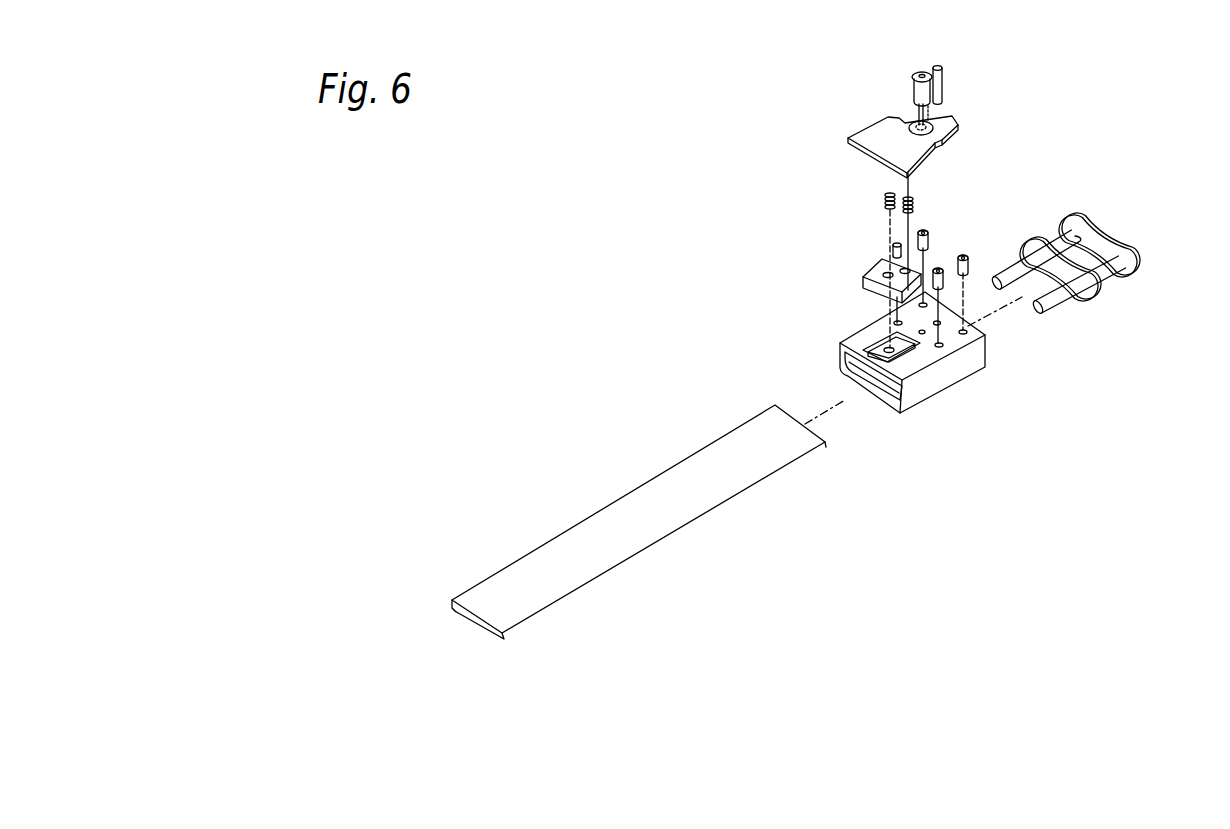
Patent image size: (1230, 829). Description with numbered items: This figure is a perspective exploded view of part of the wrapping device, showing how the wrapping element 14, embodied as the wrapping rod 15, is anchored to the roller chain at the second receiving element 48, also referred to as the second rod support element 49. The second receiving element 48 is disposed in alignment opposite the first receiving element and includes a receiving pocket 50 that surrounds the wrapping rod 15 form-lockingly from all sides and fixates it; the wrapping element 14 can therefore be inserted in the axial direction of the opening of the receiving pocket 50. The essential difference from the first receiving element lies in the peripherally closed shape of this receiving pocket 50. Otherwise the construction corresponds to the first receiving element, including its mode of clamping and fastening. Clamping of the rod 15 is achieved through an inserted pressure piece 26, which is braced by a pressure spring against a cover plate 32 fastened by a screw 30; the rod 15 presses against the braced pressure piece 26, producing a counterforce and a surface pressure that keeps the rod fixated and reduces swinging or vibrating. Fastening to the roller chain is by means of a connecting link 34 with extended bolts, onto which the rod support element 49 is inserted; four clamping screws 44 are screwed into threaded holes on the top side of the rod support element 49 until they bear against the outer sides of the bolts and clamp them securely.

The wrapping element 14 is at (639, 509).
The wrapping rod 15 is at (615, 517).
The pressure piece 26 is at (864, 276).
The screw 30 is at (914, 74).
The cover plate 32 is at (860, 133).
The connecting link 34 is at (1125, 231).
The clamping screws 44 is at (973, 241).
The second receiving element 48 is at (954, 390).
The second rod support element 49 is at (958, 395).
The receiving pocket 50 is at (858, 373).